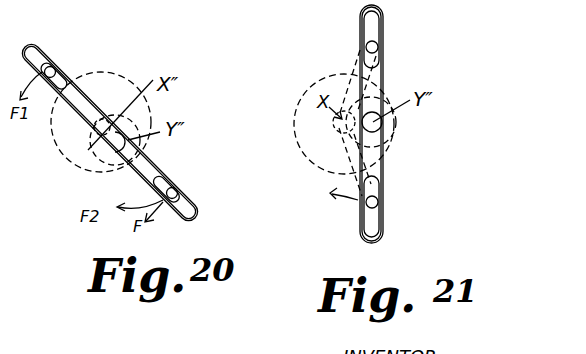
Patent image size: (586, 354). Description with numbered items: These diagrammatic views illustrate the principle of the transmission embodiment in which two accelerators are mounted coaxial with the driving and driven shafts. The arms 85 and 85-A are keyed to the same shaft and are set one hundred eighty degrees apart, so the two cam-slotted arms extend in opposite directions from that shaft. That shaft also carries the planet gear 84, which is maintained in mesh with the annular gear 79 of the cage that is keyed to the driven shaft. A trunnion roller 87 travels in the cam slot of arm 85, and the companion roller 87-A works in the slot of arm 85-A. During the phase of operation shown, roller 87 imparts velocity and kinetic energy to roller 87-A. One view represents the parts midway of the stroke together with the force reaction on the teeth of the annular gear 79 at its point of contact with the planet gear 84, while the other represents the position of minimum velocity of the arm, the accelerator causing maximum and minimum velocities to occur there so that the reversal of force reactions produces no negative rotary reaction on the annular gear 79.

In FIG. 20, the arm 85 is at (203, 208).
In FIG. 21, the arm 85 is at (379, 193).
In FIG. 20, the arm 85-A is at (33, 43).
In FIG. 21, the arm 85-A is at (384, 17).
In FIG. 20, the trunnion roller 87 is at (177, 190).
In FIG. 21, the trunnion roller 87 is at (378, 203).
In FIG. 20, the trunnion roller 87-A is at (56, 68).
In FIG. 21, the trunnion roller 87-A is at (378, 47).
In FIG. 20, the annular gear 79 is at (146, 142).
In FIG. 21, the annular gear 79 is at (304, 96).
In FIG. 20, the planet gear 84 is at (125, 132).
In FIG. 21, the planet gear 84 is at (386, 147).